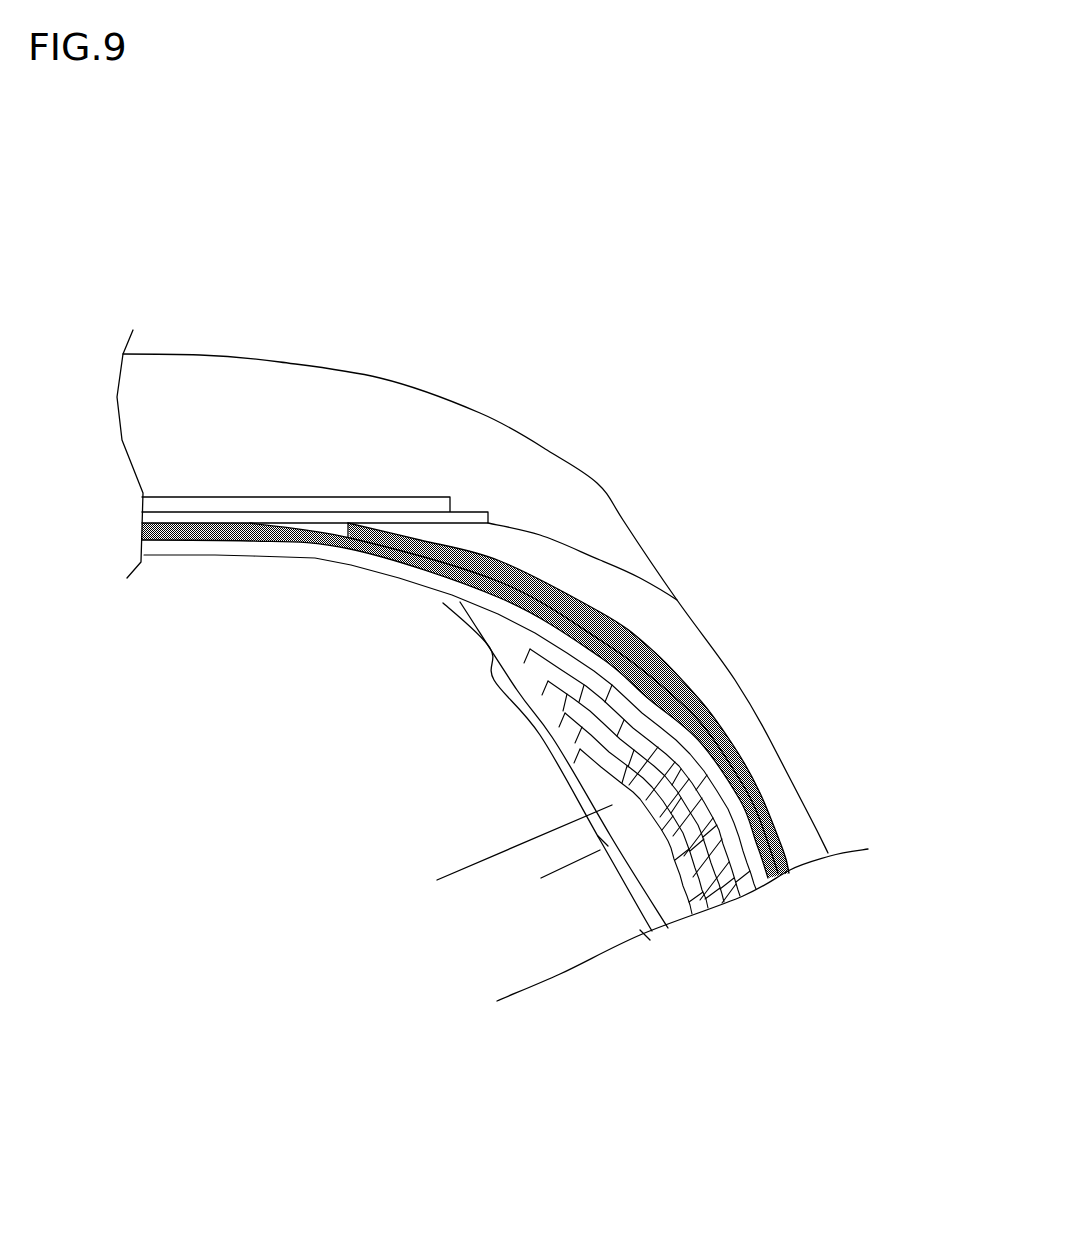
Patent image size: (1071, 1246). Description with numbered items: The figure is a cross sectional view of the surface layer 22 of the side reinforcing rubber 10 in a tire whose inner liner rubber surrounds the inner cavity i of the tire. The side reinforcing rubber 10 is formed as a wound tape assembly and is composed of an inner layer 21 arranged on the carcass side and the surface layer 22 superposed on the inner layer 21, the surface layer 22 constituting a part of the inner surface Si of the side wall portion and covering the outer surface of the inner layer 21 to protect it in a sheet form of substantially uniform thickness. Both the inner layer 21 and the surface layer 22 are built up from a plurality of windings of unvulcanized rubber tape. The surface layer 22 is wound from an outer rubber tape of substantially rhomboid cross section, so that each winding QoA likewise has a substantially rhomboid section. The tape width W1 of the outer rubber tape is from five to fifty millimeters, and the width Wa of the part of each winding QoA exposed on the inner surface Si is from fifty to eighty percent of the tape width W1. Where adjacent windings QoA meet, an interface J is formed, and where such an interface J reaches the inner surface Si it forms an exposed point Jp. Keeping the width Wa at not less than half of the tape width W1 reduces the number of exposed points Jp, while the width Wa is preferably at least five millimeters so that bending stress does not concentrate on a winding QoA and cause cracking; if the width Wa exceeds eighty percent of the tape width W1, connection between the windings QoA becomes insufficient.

The winding of the outer rubber tape QoA is at (727, 740).
The inner surface of the side wall portion Si is at (523, 710).
The interface between the windings J is at (602, 850).
The inner cavity of the tire i is at (353, 823).
The exposed point Jp is at (603, 841).
The side reinforcing rubber 10 is at (468, 840).
The inner layer 21 is at (736, 918).
The surface layer 22 is at (668, 950).
The tape width W1 is at (497, 1001).
The width of exposed part of the winding Wa is at (580, 958).